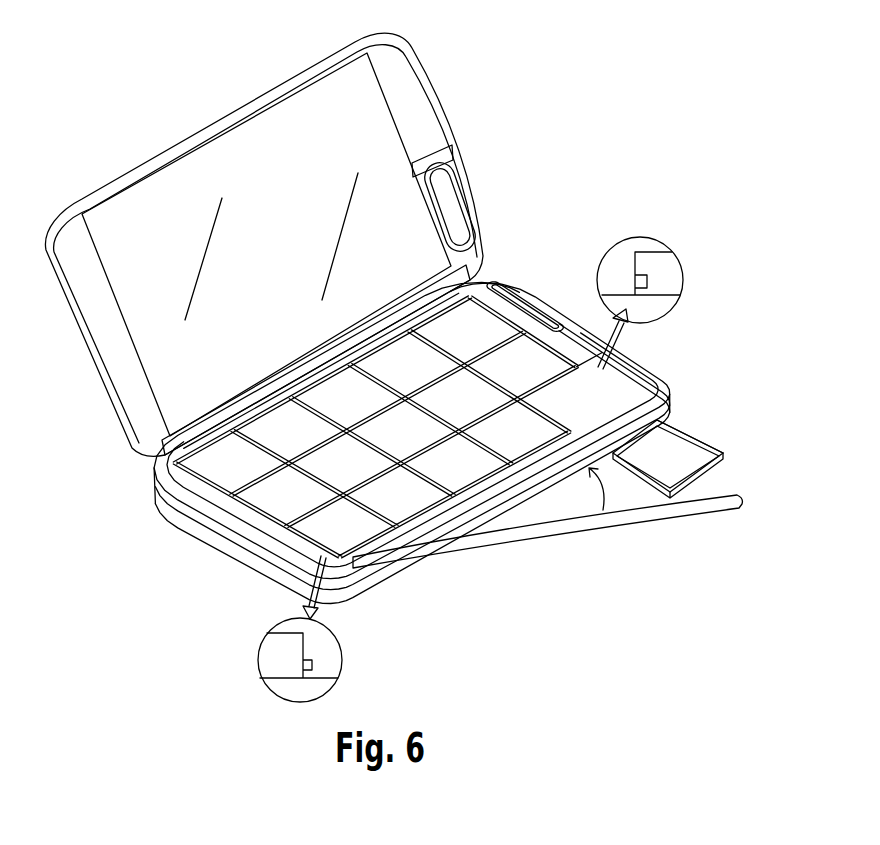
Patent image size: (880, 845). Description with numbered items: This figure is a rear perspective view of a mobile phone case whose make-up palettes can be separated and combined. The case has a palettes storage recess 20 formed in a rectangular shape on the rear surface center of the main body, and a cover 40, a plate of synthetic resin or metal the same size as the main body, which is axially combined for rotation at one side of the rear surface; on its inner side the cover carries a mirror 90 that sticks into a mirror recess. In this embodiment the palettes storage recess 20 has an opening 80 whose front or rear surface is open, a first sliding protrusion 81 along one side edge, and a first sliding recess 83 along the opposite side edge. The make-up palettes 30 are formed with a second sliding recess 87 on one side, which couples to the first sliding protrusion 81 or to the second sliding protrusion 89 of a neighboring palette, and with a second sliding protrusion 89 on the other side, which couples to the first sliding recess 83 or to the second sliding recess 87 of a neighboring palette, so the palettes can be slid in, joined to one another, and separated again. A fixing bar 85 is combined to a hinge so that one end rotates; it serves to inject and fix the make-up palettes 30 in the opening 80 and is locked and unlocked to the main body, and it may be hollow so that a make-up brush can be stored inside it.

The palettes storage recess 20 is at (628, 265).
The make-up palettes 30 is at (693, 433).
The cover 40 is at (400, 57).
The opening 80 is at (607, 410).
The first sliding protrusion 81 is at (315, 668).
The first sliding recess 83 is at (633, 282).
The fixing bar 85 is at (567, 533).
The second sliding recess 87 is at (655, 483).
The second sliding protrusion 89 is at (727, 452).
The mirror 90 is at (222, 157).